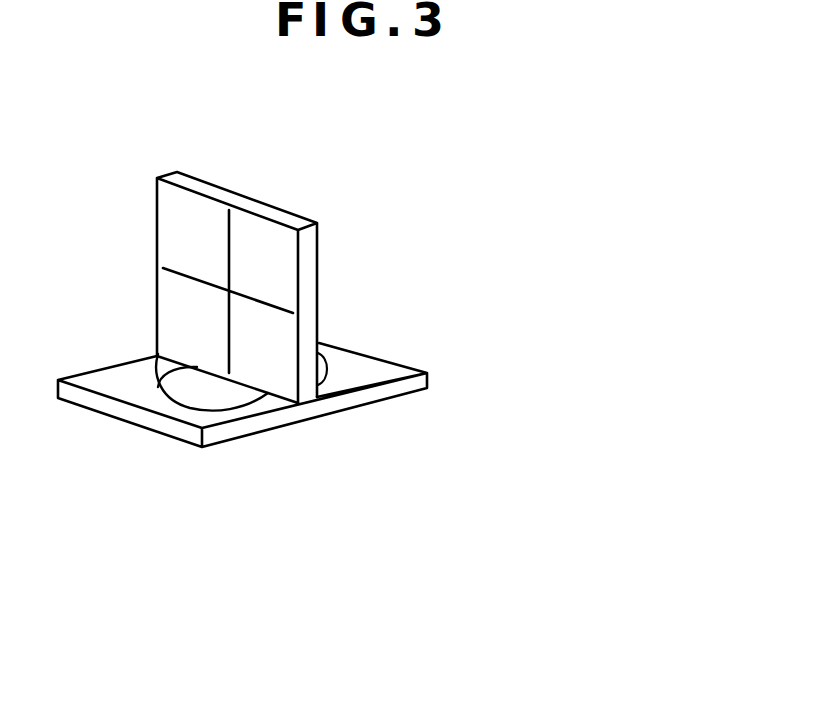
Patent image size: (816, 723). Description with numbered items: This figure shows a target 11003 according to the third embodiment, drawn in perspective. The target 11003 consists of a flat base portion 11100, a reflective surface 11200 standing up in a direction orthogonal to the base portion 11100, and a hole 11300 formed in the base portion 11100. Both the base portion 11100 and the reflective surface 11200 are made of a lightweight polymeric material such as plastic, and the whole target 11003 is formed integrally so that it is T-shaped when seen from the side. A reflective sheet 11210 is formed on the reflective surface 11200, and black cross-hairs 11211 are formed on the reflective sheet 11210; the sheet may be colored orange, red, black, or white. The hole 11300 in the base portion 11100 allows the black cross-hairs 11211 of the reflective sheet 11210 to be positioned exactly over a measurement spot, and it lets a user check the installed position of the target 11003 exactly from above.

The target 11003 is at (275, 370).
The base portion 11100 is at (289, 440).
The reflective surface 11200 is at (262, 249).
The reflective sheet 11210 is at (325, 290).
The black cross-hairs 11211 is at (161, 284).
The hole 11300 is at (261, 445).